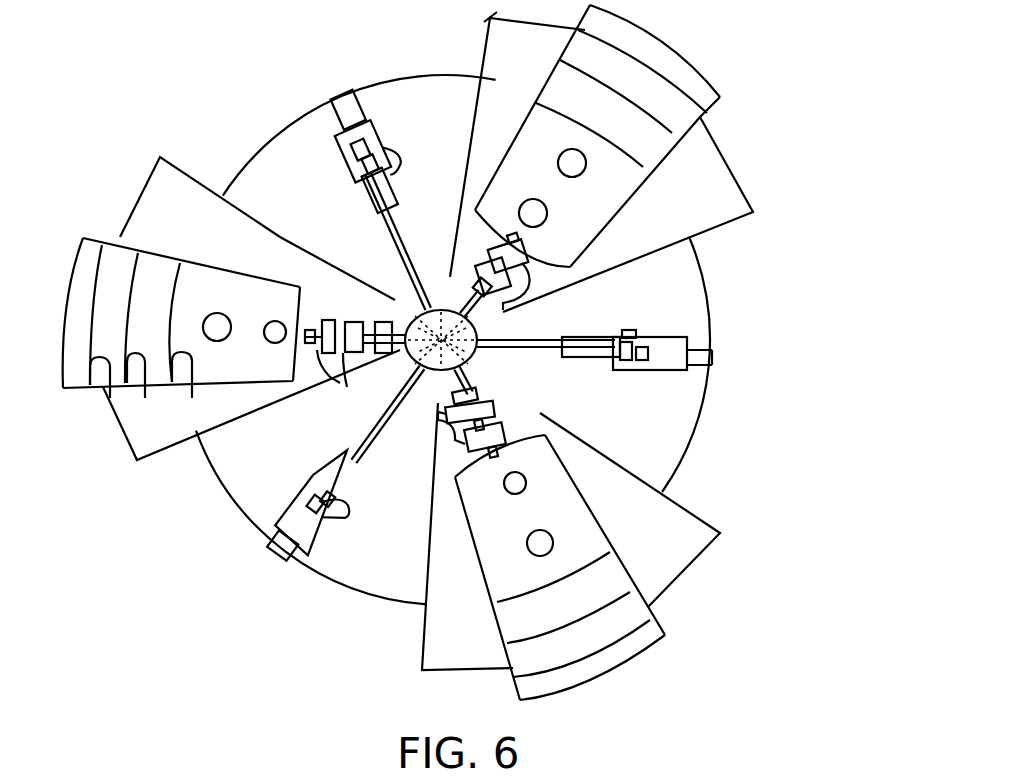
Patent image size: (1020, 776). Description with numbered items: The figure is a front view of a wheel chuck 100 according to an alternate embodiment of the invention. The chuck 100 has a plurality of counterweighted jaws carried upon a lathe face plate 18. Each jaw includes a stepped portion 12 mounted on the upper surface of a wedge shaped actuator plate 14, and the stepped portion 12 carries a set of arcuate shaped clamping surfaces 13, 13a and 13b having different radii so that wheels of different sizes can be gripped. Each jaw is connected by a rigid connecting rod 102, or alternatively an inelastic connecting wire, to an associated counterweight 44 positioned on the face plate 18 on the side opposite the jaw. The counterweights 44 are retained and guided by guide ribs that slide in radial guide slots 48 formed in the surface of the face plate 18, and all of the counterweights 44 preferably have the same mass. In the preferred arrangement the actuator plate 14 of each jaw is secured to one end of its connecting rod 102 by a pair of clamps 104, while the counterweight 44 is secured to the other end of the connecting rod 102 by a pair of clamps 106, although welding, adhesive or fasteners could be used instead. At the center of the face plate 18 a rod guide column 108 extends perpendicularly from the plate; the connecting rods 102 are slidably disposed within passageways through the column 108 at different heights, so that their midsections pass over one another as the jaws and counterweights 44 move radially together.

The wheel chuck 100 is at (277, 60).
The stepped portion 12 is at (703, 88).
The arcuate shaped clamping surface 13 is at (145, 398).
The arcuate shaped clamping surface 13a is at (192, 398).
The arcuate shaped clamping surface 13b is at (110, 384).
The actuator plate 14 is at (698, 218).
The lathe face plate 18 is at (676, 450).
The counterweight 44 is at (377, 130).
The radial guide slot 48 is at (370, 196).
The connecting rod 102 is at (395, 236).
The clamp 104 is at (340, 383).
The clamp 106 is at (398, 177).
The rod guide column 108 is at (458, 352).